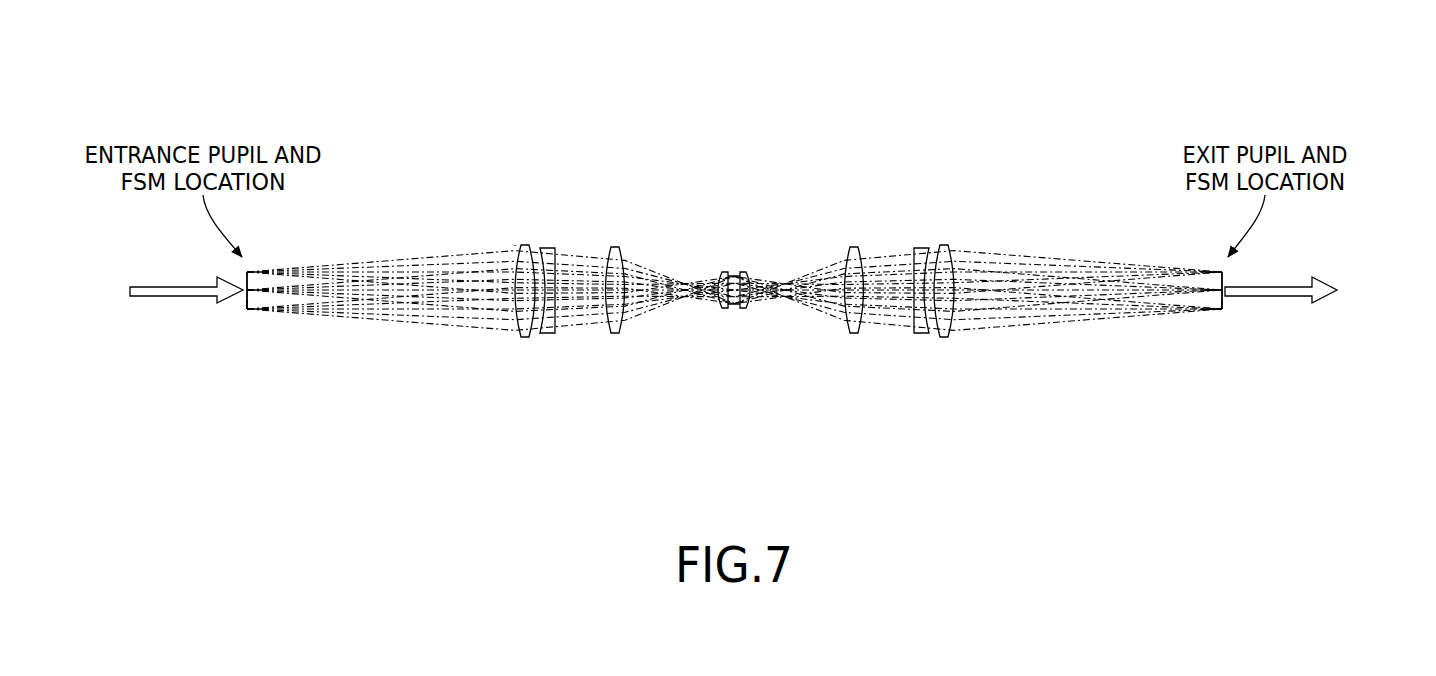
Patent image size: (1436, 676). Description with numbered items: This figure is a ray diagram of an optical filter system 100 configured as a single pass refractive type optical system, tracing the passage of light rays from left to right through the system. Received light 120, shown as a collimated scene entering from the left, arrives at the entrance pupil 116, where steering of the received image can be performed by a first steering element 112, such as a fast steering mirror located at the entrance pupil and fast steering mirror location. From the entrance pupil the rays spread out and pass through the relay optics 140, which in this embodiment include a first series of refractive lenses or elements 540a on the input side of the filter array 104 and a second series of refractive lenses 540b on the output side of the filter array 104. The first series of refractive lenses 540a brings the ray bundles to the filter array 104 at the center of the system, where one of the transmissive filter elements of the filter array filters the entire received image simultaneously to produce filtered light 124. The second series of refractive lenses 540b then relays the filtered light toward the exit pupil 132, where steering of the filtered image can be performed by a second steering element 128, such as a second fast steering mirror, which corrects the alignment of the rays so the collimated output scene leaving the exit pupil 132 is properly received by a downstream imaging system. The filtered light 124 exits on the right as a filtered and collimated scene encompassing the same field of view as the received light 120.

The optical filter system 100 is at (548, 106).
The filter array 104 is at (733, 272).
The first steering element 112 is at (246, 306).
The entrance pupil 116 is at (246, 276).
The received light 120 is at (142, 292).
The filtered light 124 is at (1326, 296).
The second steering element 128 is at (1224, 306).
The exit pupil 132 is at (1224, 276).
The relay optics 140 is at (502, 221).
The first series of refractive lenses 540a is at (519, 346).
The second series of refractive lenses 540b is at (948, 346).